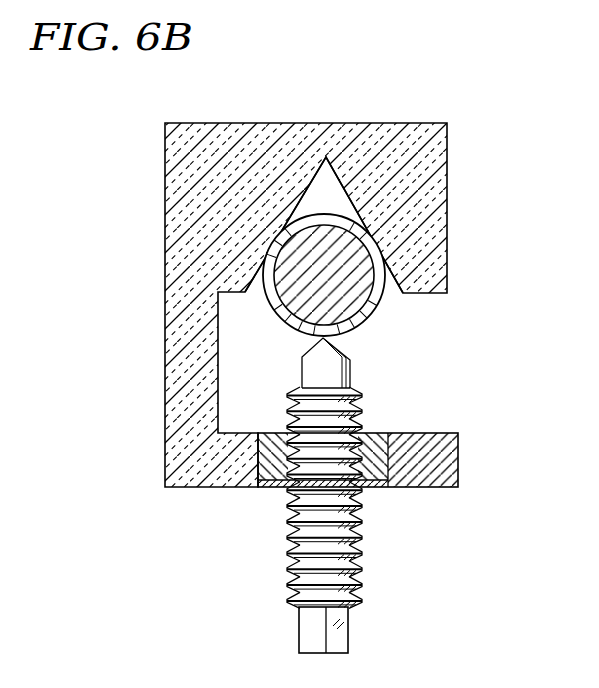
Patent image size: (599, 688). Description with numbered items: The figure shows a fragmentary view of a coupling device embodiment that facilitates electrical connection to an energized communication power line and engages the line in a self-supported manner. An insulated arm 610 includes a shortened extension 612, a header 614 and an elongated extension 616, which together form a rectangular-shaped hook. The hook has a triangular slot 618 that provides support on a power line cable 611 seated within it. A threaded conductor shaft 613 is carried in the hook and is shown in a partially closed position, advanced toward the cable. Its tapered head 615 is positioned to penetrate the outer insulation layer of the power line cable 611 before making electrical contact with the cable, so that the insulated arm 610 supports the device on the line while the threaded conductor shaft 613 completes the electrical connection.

The insulated arm 610 is at (92, 166).
The power line cable 611 is at (370, 313).
The shortened extension 612 is at (432, 279).
The threaded conductor shaft 613 is at (290, 535).
The header 614 is at (313, 123).
The tapered head 615 is at (317, 352).
The elongated extension 616 is at (180, 347).
The triangular slot 618 is at (367, 218).